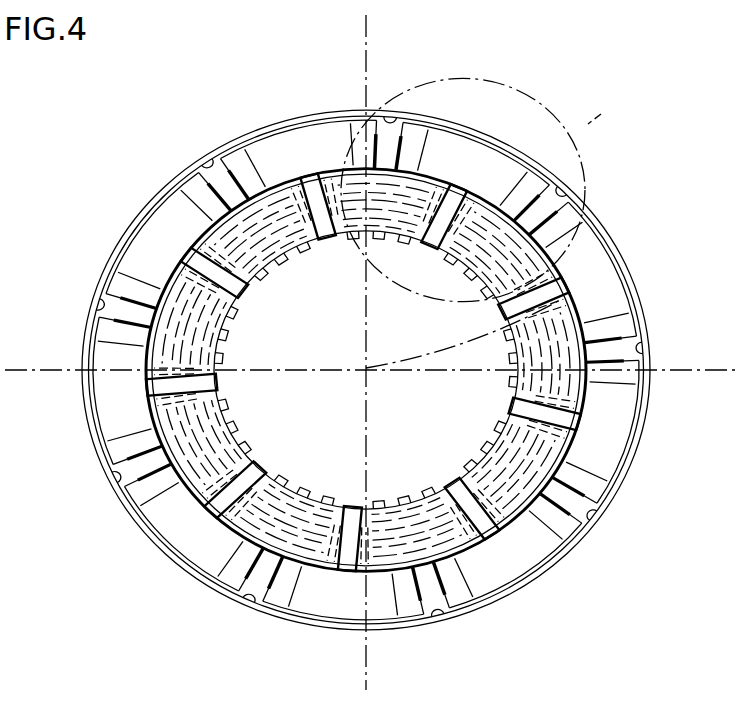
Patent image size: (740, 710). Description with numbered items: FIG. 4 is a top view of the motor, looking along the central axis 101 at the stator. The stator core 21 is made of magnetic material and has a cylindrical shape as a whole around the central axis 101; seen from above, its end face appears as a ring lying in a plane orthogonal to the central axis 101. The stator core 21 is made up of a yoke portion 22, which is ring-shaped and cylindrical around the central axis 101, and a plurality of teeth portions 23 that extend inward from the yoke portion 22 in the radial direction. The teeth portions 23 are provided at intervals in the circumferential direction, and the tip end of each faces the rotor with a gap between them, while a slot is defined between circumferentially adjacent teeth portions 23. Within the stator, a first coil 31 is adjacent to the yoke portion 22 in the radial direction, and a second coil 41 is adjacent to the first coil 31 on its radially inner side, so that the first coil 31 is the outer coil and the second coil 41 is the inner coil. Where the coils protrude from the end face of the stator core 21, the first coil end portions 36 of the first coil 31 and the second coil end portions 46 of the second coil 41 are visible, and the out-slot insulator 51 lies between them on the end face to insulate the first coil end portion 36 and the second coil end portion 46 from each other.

The stator core 21 is at (573, 217).
The yoke portion 22 is at (588, 512).
The teeth portions 23 is at (563, 493).
The first coil 31 is at (262, 126).
The first coil end portions 36 is at (212, 162).
The second coil 41 is at (405, 166).
The second coil end portions 46 is at (447, 207).
The out-slot insulator 51 is at (305, 140).
The central axis 101 is at (370, 352).